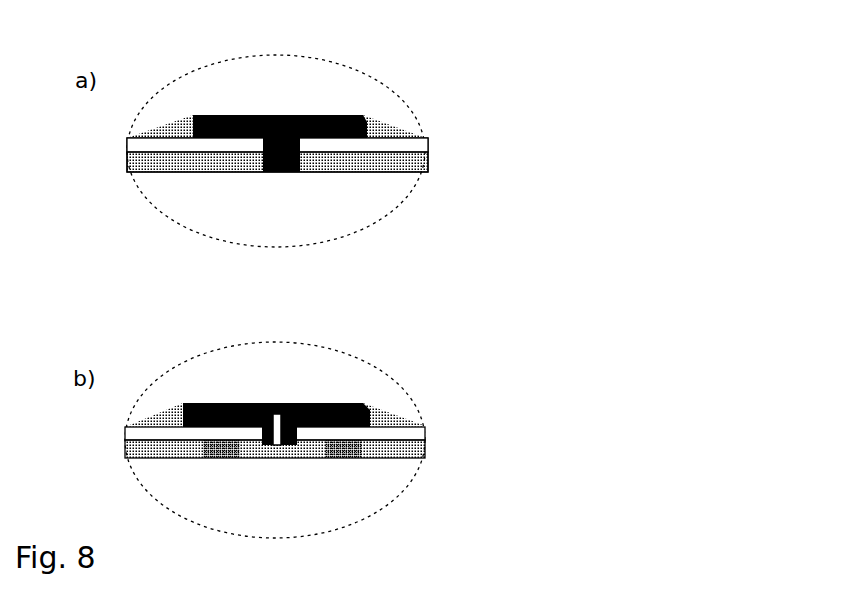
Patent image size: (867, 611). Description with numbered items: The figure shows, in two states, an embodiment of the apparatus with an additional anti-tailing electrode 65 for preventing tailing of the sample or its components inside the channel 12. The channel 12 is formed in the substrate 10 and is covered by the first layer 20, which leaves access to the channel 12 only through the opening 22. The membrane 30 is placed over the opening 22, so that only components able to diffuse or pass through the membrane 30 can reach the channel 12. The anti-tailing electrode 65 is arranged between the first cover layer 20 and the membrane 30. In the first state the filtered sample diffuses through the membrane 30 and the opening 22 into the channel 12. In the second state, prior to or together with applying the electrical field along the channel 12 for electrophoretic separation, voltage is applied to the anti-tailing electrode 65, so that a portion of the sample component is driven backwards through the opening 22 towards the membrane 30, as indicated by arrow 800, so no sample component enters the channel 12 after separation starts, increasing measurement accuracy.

The substrate 10 is at (277, 172).
The channel 12 is at (407, 163).
The first layer 20 is at (403, 148).
The opening 22 is at (300, 160).
The membrane 30 is at (370, 122).
The anti-tailing electrode 65 is at (337, 118).
The arrow 800 is at (297, 403).